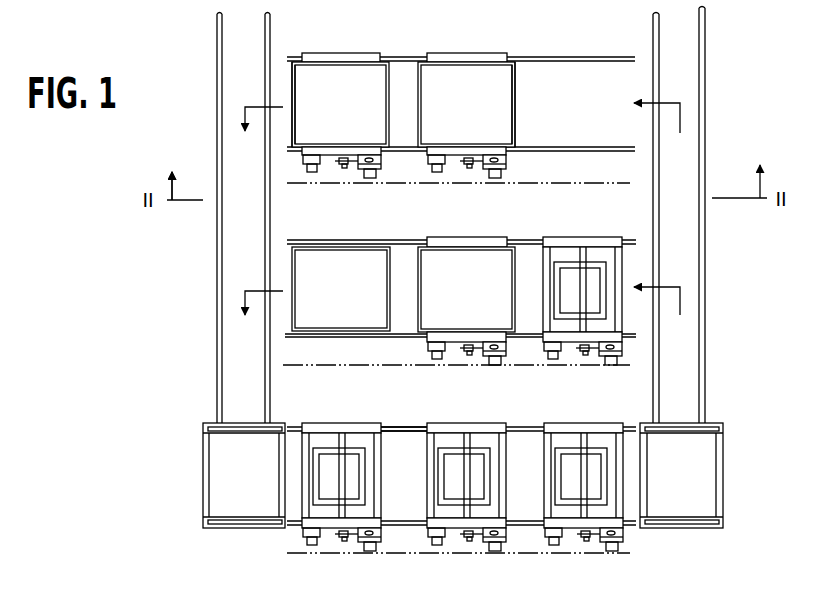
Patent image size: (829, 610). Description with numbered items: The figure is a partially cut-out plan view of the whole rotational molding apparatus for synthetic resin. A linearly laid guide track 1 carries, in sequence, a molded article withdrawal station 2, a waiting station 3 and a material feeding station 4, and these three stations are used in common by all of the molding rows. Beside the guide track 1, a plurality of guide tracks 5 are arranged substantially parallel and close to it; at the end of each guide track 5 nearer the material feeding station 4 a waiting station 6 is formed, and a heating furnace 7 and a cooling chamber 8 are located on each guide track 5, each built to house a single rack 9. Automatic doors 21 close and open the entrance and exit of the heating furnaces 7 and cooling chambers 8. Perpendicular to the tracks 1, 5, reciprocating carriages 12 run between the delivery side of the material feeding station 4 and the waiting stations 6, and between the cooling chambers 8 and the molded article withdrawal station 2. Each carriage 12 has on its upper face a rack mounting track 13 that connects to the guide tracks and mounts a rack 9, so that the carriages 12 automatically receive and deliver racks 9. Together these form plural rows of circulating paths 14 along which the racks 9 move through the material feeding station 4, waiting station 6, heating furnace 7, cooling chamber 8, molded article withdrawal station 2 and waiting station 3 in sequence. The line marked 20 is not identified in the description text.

The guide track 1 is at (404, 425).
The molded article withdrawal station 2 is at (292, 534).
The waiting station 3 is at (470, 422).
The material feeding station 4 is at (632, 534).
The guide tracks 5 is at (545, 57).
The waiting stations 6 is at (582, 88).
The heating furnace 7 is at (448, 70).
The cooling chamber 8 is at (330, 78).
The rack 9 is at (334, 422).
The reciprocating carriage 12 is at (227, 474).
The rack mounting track 13 is at (248, 424).
The circulating path 14 is at (680, 120).
The conveyor center line 20 is at (333, 184).
The automatic door 21 is at (292, 118).